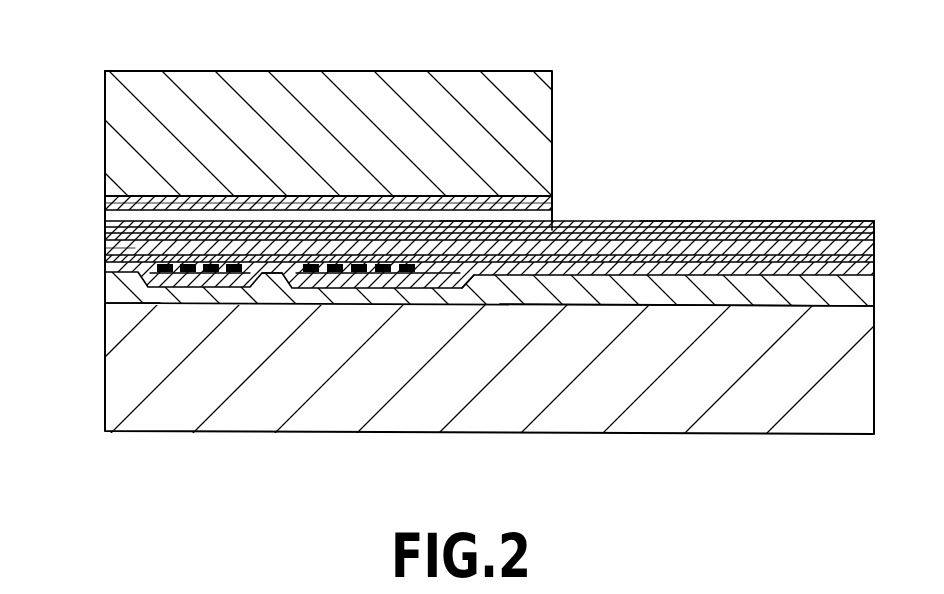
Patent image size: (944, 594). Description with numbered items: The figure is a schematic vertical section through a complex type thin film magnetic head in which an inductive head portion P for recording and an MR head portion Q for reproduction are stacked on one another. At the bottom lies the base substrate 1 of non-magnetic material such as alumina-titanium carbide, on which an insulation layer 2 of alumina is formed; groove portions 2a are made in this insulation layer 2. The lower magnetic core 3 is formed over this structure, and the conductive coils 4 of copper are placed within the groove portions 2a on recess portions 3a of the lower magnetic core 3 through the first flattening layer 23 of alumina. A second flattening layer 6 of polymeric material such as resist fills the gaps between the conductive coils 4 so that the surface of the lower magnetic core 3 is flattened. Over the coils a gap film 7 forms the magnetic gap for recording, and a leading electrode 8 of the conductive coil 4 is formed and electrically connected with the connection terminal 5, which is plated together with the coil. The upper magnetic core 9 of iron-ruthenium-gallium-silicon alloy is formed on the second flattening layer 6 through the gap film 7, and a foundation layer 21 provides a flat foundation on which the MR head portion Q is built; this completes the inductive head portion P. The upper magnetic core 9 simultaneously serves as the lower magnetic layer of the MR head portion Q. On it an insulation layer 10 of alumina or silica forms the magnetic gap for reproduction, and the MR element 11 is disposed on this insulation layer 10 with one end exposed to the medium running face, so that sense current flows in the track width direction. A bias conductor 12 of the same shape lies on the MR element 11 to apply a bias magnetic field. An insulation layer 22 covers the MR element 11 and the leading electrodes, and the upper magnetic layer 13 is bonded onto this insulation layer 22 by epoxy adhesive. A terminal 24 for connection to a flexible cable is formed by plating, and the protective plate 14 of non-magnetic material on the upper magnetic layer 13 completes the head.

The base substrate 1 is at (352, 396).
The insulation layer 2 is at (517, 293).
The groove portion 2a is at (424, 290).
The lower magnetic core 3 is at (125, 263).
The recess portion 3a is at (462, 222).
The conductive coil 4 is at (208, 272).
The connection terminal 5 is at (405, 268).
The second flattening layer 6 is at (128, 300).
The gap film 7 is at (112, 252).
The leading electrode 8 is at (440, 252).
The upper magnetic core 9 is at (266, 246).
The insulation layer 10 is at (162, 197).
The MR element 11 is at (112, 220).
The bias conductor 12 is at (115, 222).
The upper magnetic layer 13 is at (236, 222).
The protective plate 14 is at (208, 104).
The foundation layer 21 is at (300, 258).
The insulation layer 22 is at (132, 192).
The first flattening layer 23 is at (250, 272).
The terminal 24 is at (774, 220).
The inductive head portion P is at (672, 214).
The MR head portion Q is at (565, 204).